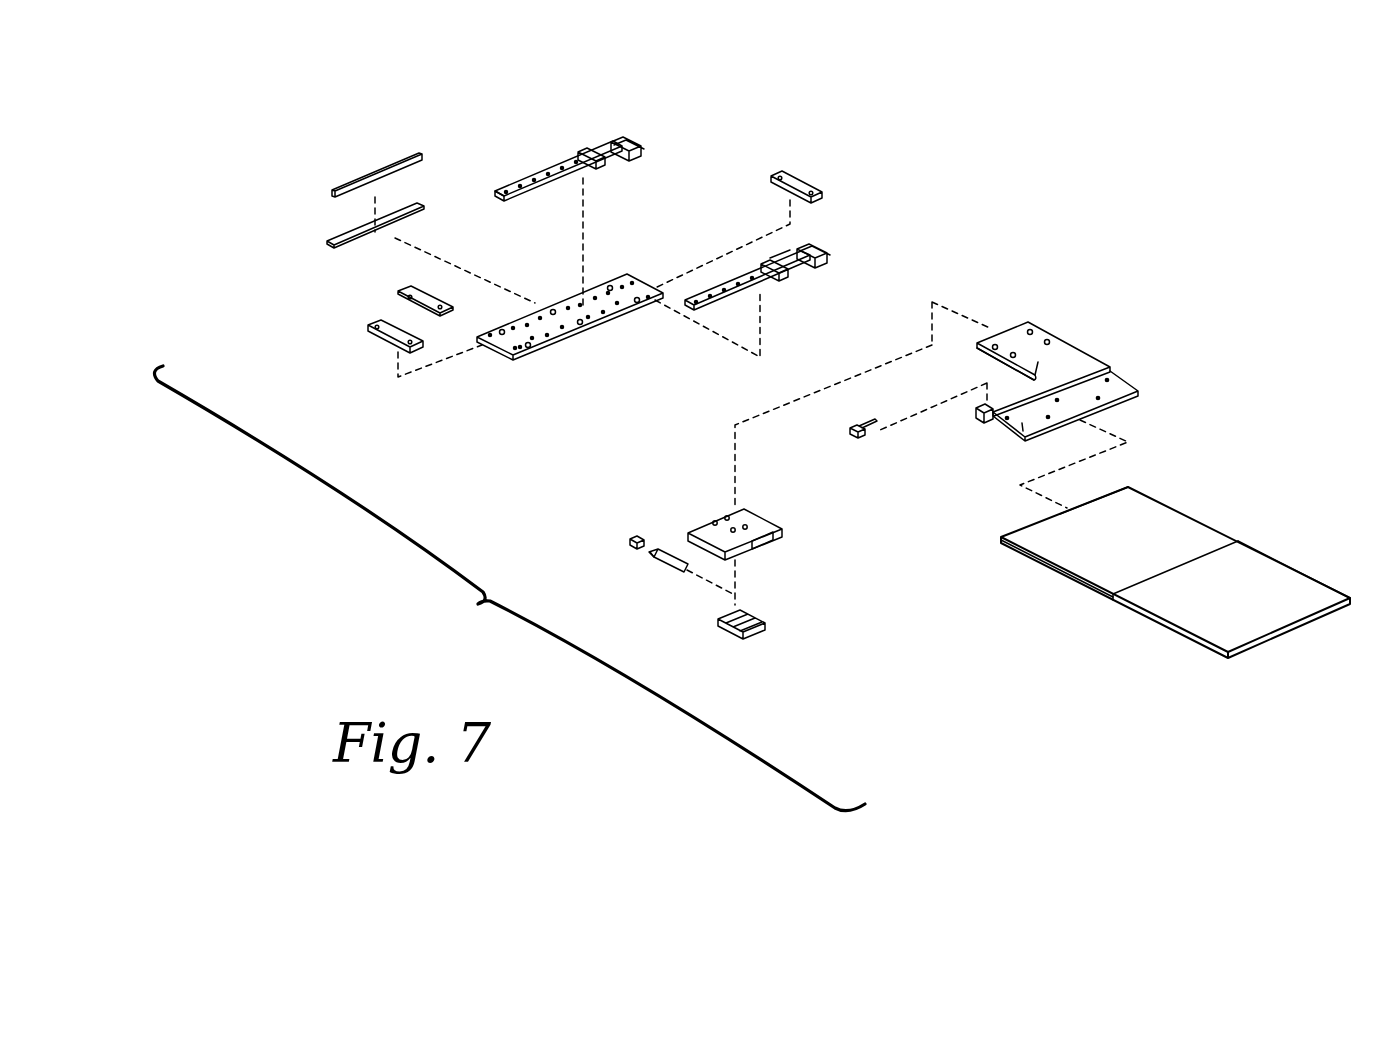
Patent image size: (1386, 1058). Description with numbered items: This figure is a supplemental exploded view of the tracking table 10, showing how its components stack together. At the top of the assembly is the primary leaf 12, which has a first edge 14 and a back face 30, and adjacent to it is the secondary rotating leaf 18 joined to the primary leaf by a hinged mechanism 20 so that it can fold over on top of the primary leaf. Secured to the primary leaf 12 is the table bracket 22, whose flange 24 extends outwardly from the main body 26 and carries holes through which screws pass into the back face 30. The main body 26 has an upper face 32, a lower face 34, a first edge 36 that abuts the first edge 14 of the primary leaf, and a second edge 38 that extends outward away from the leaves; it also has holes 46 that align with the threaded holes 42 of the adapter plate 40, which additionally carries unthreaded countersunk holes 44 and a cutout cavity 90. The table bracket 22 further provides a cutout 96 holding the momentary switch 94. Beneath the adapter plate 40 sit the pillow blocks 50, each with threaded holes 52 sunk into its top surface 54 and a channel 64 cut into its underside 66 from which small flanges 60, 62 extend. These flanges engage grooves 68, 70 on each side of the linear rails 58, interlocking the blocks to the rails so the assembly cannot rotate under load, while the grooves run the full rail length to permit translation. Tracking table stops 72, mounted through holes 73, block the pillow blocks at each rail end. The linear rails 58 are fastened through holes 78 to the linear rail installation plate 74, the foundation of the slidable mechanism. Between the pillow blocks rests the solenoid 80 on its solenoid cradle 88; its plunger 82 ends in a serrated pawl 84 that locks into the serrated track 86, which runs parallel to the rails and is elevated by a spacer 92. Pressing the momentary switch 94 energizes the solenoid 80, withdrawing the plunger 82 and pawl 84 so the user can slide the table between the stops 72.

The tracking table 10 is at (1090, 142).
The primary leaf 12 is at (1165, 520).
The first edge 14 is at (1113, 488).
The secondary rotating leaf 18 is at (1273, 577).
The hinged mechanism 20 is at (1110, 596).
The table bracket 22 is at (1073, 347).
The flange 24 is at (1022, 426).
The main body 26 is at (1035, 363).
The back face 30 is at (1032, 560).
The upper face 32 is at (1057, 352).
The lower face 34 is at (980, 350).
The first edge 36 is at (1118, 377).
The second edge 38 is at (1001, 328).
The adapter plate 40 is at (741, 509).
The threaded holes 42 is at (731, 512).
The unthreaded countersunk holes 44 is at (768, 515).
The holes 46 is at (1033, 328).
The pillow blocks 50 is at (795, 272).
The threaded holes 52 is at (770, 261).
The top surface 54 is at (829, 256).
The linear rails 58 is at (727, 299).
The small flange 60 is at (565, 182).
The small flange 62 is at (596, 168).
The channel 64 is at (641, 150).
The underside 66 is at (778, 276).
The groove 68 is at (505, 185).
The groove 70 is at (541, 192).
The tracking table stops 72 is at (385, 344).
The holes 73 is at (375, 322).
The linear rail installation plate 74 is at (570, 356).
The holes 78 is at (596, 320).
The solenoid 80 is at (667, 556).
The plunger 82 is at (652, 555).
The serrated pawl 84 is at (633, 538).
The serrated track 86 is at (372, 176).
The solenoid cradle 88 is at (738, 634).
The cutout cavity 90 is at (754, 540).
The spacer 92 is at (422, 211).
The momentary switch 94 is at (869, 440).
The cutout 96 is at (978, 405).